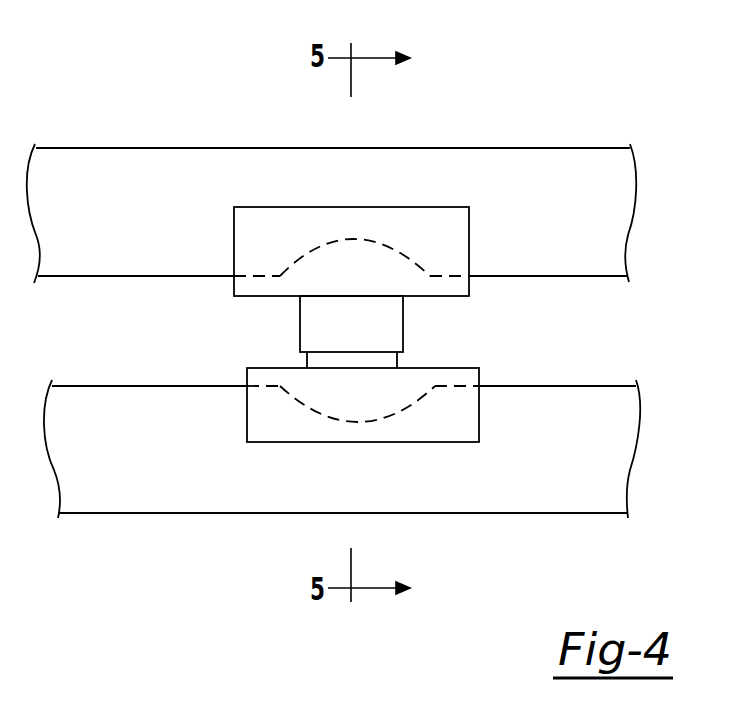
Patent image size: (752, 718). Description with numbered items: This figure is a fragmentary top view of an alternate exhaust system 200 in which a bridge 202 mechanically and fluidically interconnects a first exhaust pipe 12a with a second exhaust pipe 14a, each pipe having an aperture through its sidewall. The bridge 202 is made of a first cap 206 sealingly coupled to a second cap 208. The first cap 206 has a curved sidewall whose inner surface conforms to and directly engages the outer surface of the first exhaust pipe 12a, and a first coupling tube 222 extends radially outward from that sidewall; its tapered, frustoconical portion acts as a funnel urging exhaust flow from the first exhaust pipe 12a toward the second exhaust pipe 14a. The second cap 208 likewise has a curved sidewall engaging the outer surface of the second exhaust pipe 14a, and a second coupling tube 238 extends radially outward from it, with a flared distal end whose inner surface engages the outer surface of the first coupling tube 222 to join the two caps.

The exhaust system 200 is at (606, 80).
The second exhaust pipe 14a is at (547, 165).
The first exhaust pipe 12a is at (533, 490).
The second cap 208 is at (251, 297).
The second coupling tube 238 is at (318, 307).
The bridge 202 is at (432, 325).
The first cap 206 is at (260, 368).
The first coupling tube 222 is at (336, 358).